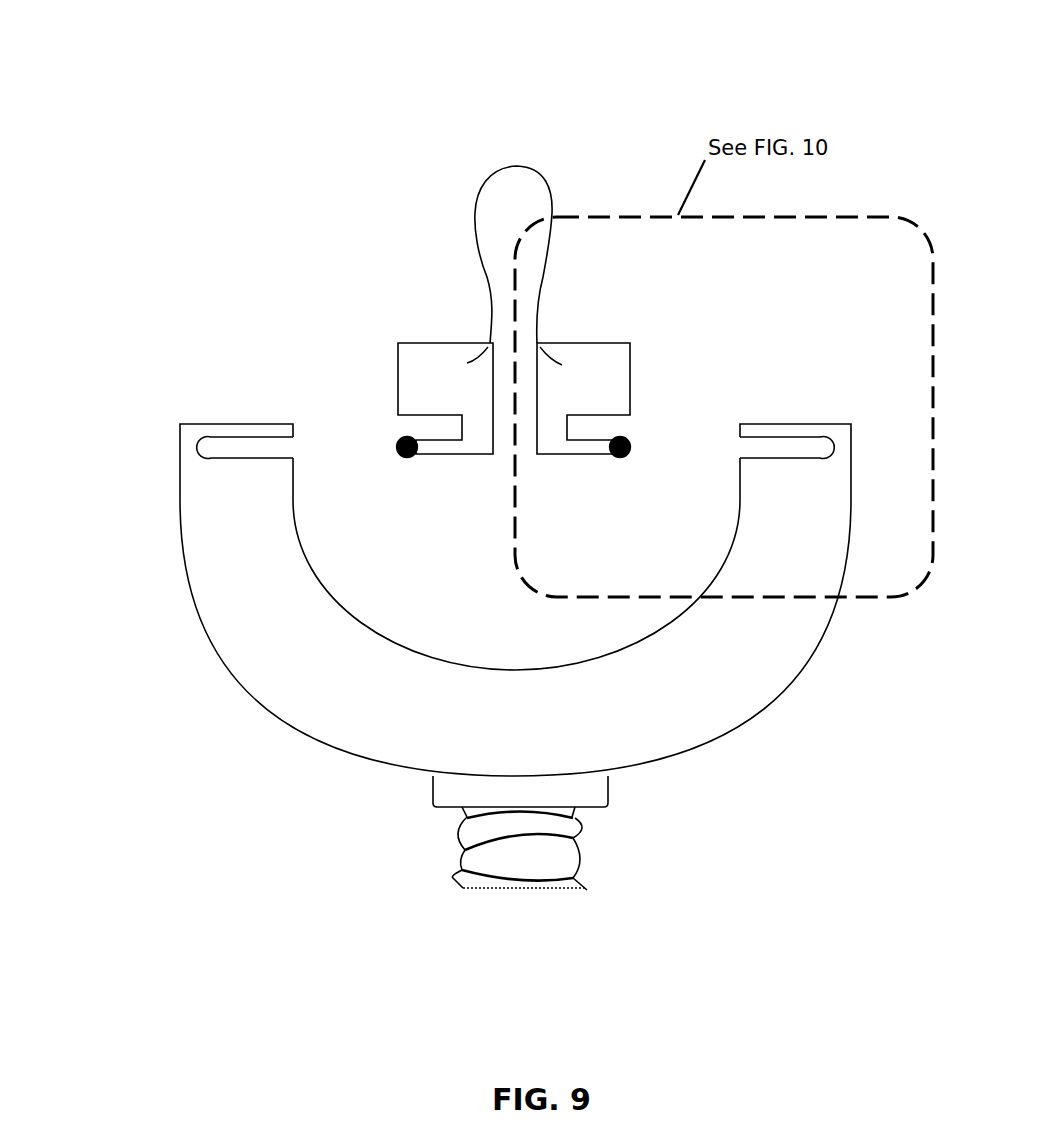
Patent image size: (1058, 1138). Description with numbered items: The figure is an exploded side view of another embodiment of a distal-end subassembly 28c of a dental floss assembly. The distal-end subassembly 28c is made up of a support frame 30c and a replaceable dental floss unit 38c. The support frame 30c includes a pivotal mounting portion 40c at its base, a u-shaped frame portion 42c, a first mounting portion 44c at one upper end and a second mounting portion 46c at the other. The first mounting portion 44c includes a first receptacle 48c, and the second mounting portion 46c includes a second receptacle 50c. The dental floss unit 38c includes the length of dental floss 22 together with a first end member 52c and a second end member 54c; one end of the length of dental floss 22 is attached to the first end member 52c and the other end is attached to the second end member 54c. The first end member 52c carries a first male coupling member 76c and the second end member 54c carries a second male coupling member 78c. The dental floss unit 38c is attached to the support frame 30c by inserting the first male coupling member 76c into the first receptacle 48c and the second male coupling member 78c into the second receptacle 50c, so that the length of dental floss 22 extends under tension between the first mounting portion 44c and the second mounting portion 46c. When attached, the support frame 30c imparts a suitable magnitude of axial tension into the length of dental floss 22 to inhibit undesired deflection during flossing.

The length of dental floss 22 is at (530, 163).
The distal-end subassembly 28c is at (233, 87).
The support frame 30c is at (180, 682).
The replaceable dental floss unit 38c is at (432, 182).
The pivotal mounting portion 40c is at (410, 862).
The u-shaped frame portion 42c is at (740, 717).
The first mounting portion 44c is at (167, 393).
The second mounting portion 46c is at (832, 388).
The first receptacle 48c is at (290, 447).
The second receptacle 50c is at (742, 445).
The first end member 52c is at (393, 322).
The second end member 54c is at (632, 313).
The first male coupling member 76c is at (434, 462).
The second male coupling member 78c is at (593, 462).